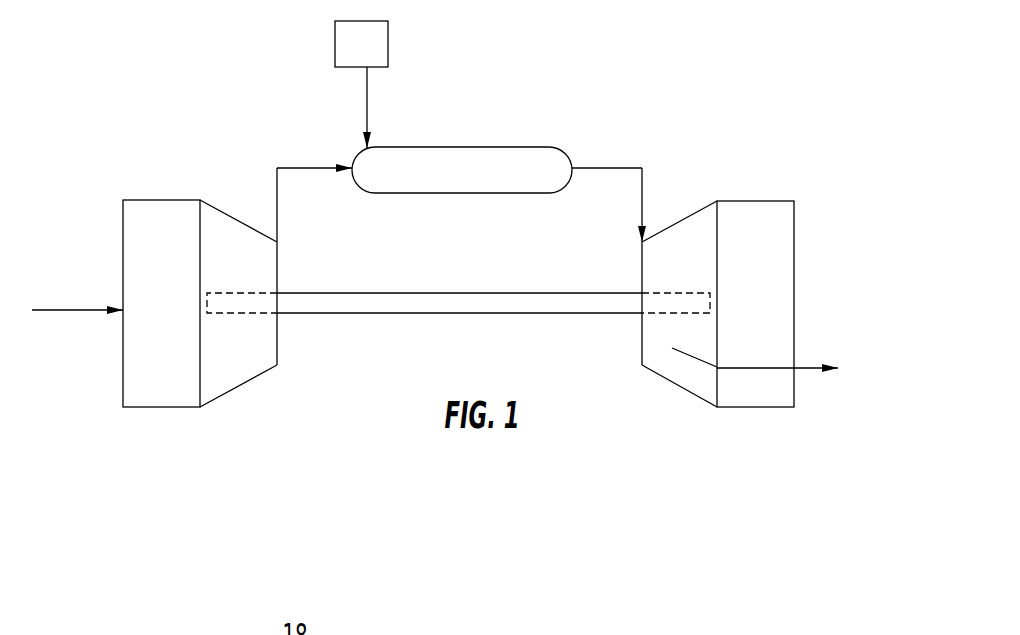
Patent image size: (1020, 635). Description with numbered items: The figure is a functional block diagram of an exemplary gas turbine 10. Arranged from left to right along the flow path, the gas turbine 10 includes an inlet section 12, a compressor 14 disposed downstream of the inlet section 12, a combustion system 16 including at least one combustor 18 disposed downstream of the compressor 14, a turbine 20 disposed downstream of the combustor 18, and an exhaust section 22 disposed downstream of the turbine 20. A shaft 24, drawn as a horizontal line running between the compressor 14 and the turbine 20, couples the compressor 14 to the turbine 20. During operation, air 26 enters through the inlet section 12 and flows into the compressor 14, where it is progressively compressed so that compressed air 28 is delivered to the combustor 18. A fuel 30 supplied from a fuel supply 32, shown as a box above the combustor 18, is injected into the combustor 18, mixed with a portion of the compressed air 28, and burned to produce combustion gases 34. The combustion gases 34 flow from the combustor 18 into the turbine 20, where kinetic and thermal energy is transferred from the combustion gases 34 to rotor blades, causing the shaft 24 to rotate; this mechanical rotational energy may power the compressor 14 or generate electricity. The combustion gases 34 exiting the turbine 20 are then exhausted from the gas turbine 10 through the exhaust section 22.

The gas turbine 10 is at (318, 95).
The inlet section 12 is at (148, 200).
The compressor 14 is at (232, 215).
The combustion system 16 is at (472, 83).
The combustor 18 is at (503, 147).
The turbine 20 is at (680, 222).
The exhaust section 22 is at (785, 200).
The shaft 24 is at (421, 313).
The air 26 is at (85, 305).
The compressed air 28 is at (310, 170).
The fuel 30 is at (370, 118).
The fuel supply 32 is at (350, 58).
The combustion gases 34 is at (590, 168).